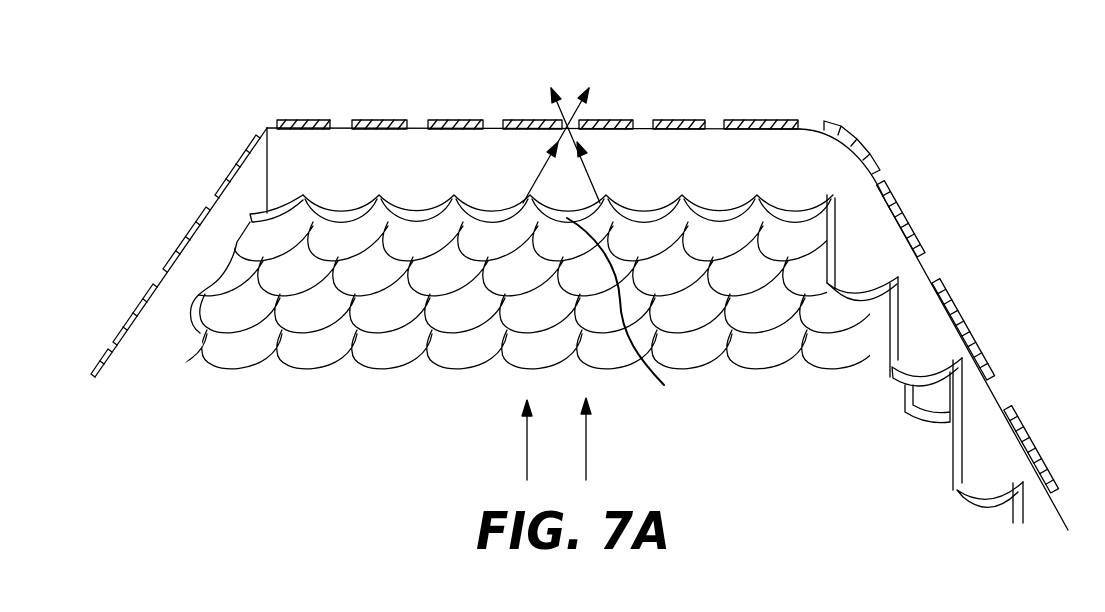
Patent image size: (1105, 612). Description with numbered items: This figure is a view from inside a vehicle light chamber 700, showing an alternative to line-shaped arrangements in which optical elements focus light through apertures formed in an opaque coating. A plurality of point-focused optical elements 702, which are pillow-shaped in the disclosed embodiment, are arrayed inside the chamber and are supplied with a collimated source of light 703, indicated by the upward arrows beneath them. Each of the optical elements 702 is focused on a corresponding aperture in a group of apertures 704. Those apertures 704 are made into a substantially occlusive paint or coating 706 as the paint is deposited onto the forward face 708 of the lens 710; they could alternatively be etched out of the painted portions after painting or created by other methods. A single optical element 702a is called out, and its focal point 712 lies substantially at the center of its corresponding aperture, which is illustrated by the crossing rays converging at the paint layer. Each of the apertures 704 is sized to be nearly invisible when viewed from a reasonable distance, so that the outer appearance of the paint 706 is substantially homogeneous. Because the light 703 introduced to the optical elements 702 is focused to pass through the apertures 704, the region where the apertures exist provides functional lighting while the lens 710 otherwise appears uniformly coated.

The vehicle light chamber 700 is at (717, 430).
The point-focused optical elements 702 is at (498, 296).
The single optical element 702a is at (628, 316).
The collimated source of light 703 is at (527, 430).
The apertures 704 is at (647, 120).
The occlusive paint 706 is at (390, 118).
The forward face 708 is at (343, 118).
The lens 710 is at (750, 150).
The focal point 712 is at (566, 124).